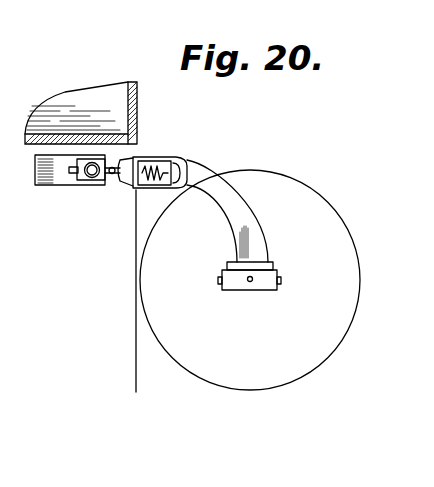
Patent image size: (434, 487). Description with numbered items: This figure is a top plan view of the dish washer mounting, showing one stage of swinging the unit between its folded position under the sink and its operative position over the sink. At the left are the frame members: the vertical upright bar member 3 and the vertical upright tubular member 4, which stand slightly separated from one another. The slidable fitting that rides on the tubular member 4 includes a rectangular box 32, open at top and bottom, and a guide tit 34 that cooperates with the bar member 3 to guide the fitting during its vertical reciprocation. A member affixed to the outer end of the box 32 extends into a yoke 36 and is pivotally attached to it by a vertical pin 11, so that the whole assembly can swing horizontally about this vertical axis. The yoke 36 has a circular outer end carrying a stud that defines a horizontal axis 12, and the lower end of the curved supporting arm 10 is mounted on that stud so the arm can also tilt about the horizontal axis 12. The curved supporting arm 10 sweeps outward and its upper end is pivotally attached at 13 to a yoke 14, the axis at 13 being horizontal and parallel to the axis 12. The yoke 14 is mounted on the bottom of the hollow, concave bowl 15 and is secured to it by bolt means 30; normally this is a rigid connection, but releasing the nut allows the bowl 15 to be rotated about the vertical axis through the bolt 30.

The upright bar member 3 is at (70, 171).
The upright tubular member 4 is at (100, 155).
The curved supporting arm 10 is at (241, 214).
The vertical pivotal connection 11 is at (109, 180).
The horizontal axis 12 is at (190, 174).
The pivotal attachment 13 is at (282, 282).
The yoke 14 is at (268, 278).
The hollow concave bowl 15 is at (348, 223).
The bolt means 30 is at (250, 283).
The rectangular box 32 is at (88, 158).
The guide tit 34 is at (77, 175).
The yoke 36 is at (121, 163).